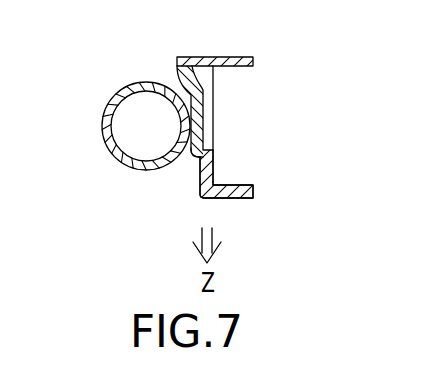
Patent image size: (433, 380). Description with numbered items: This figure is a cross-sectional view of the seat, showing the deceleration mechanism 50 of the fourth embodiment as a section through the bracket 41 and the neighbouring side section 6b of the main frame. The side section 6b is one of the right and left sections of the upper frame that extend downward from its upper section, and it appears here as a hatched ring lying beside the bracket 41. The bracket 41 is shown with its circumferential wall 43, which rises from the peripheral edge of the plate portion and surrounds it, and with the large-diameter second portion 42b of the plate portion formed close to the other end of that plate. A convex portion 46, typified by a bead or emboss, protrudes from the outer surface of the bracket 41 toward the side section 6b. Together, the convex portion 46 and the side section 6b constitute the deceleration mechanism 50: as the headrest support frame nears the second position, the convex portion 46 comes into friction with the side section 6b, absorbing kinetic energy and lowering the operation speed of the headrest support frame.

The side section 6b is at (104, 122).
The bracket 41 is at (222, 156).
The second portion 42b is at (215, 166).
The circumferential wall 43 is at (227, 56).
The convex portion 46 is at (190, 155).
The deceleration mechanism 50 is at (192, 172).